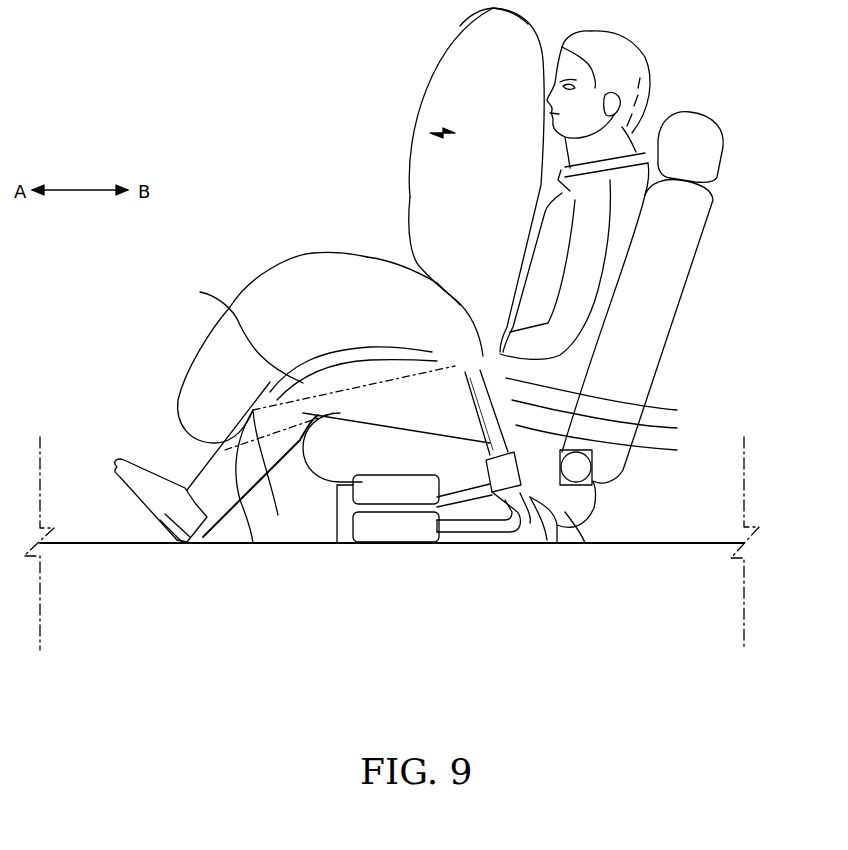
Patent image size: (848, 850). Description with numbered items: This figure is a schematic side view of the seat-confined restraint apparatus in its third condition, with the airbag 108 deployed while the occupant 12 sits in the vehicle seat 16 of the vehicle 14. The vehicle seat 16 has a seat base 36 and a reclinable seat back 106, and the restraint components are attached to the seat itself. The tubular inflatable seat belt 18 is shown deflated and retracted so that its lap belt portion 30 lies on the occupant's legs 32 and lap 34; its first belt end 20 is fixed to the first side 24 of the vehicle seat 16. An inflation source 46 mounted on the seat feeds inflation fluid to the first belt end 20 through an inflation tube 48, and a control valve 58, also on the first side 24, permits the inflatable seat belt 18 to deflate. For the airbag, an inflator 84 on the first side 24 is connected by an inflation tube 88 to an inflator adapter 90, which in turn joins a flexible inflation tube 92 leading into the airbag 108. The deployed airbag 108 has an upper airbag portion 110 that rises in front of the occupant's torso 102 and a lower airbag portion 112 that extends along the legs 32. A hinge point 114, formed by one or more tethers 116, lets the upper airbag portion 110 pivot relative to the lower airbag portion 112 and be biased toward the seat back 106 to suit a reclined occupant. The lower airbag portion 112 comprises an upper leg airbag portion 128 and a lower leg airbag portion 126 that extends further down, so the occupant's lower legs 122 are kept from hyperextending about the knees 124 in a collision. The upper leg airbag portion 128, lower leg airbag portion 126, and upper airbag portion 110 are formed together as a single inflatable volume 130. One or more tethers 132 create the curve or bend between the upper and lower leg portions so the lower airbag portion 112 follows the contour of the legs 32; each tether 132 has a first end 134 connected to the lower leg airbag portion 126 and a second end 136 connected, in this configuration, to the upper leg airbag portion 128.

The occupant 12 is at (641, 53).
The vehicle 14 is at (704, 545).
The vehicle seat 16 is at (655, 323).
The inflatable seat belt 18 is at (637, 430).
The first belt end 20 is at (677, 450).
The first side of the vehicle seat 24 is at (592, 506).
The lap belt portion 30 is at (677, 410).
The legs 32 is at (393, 393).
The lap 34 is at (440, 407).
The seat base 36 is at (580, 510).
The inflation source 46 is at (368, 528).
The inflation tube 48 is at (523, 513).
The control valve 58 is at (547, 525).
The inflator 84 is at (406, 490).
The inflation tube 88 is at (470, 513).
The inflator adapter 90 is at (592, 492).
The flexible inflation tube 92 is at (593, 473).
The torso 102 is at (590, 273).
The seat back 106 is at (677, 258).
The airbag 108 is at (433, 87).
The upper airbag portion 110 is at (455, 34).
The lower airbag portion 112 is at (281, 268).
The hinge point 114 is at (437, 283).
The tethers 116 is at (477, 327).
The lower legs 122 is at (205, 468).
The knees 124 is at (228, 332).
The lower leg airbag portion 126 is at (205, 360).
The upper leg airbag portion 128 is at (345, 280).
The single inflatable volume 130 is at (430, 133).
The tethers 132 is at (253, 410).
The first end 134 is at (278, 515).
The second end 136 is at (433, 350).